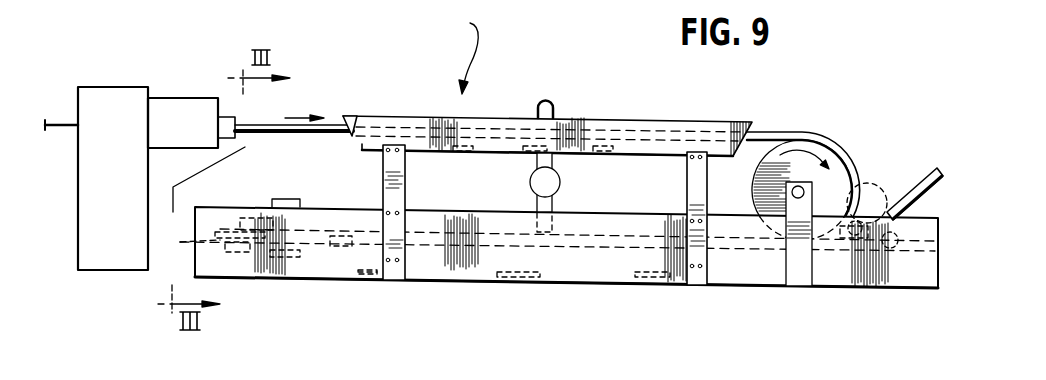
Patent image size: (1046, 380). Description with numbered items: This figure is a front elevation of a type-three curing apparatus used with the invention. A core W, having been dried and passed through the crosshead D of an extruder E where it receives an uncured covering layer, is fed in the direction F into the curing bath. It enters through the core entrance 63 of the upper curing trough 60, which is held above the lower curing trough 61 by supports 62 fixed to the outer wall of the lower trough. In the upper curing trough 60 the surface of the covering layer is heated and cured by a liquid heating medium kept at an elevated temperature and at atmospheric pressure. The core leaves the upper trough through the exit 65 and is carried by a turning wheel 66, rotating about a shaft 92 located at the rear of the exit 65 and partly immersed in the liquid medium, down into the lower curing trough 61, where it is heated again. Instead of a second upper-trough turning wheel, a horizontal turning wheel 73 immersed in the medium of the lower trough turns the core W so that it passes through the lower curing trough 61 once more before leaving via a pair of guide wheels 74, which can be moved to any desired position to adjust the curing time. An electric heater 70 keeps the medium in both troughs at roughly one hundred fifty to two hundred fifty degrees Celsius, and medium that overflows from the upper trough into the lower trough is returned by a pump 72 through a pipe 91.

The extruder E is at (123, 102).
The crosshead D is at (186, 105).
The core W is at (332, 122).
The curing bath F is at (466, 54).
The upper curing trough 60 is at (603, 127).
The lower curing trough 61 is at (893, 273).
The supports 62 is at (407, 175).
The core entrance 63 is at (353, 117).
The exit 65 is at (752, 127).
The turning wheel 66 is at (753, 175).
The electric heater 70 is at (380, 280).
The pump 72 is at (562, 181).
The horizontal turning wheel 73 is at (189, 242).
The guide wheels 74 is at (895, 208).
The pipe 91 is at (552, 103).
The shaft 92 is at (787, 197).